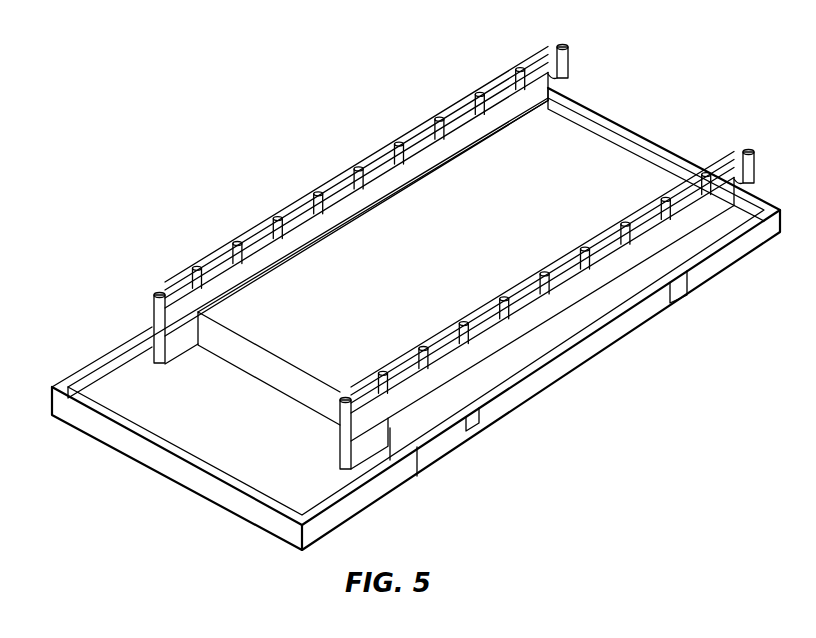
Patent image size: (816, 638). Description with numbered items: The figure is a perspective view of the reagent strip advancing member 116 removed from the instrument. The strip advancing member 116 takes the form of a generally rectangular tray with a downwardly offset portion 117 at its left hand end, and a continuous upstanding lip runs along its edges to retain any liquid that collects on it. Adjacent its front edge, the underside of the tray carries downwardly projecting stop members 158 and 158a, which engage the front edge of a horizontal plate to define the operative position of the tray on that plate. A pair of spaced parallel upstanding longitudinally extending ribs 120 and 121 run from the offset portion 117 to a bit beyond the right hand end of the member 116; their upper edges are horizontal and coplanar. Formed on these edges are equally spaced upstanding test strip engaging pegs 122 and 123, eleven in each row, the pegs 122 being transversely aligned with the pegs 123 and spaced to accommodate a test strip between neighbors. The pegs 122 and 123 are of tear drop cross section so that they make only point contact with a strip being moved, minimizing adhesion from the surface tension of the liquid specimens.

The reagent strip advancing member 116 is at (516, 220).
The downwardly offset portion 117 is at (227, 458).
The upstanding longitudinally extending rib 120 is at (249, 266).
The upstanding longitudinally extending rib 121 is at (580, 292).
The test strip engaging pegs 122 is at (330, 182).
The test strip engaging pegs 123 is at (488, 308).
The stop member 158 is at (480, 424).
The stop member 158a is at (660, 303).